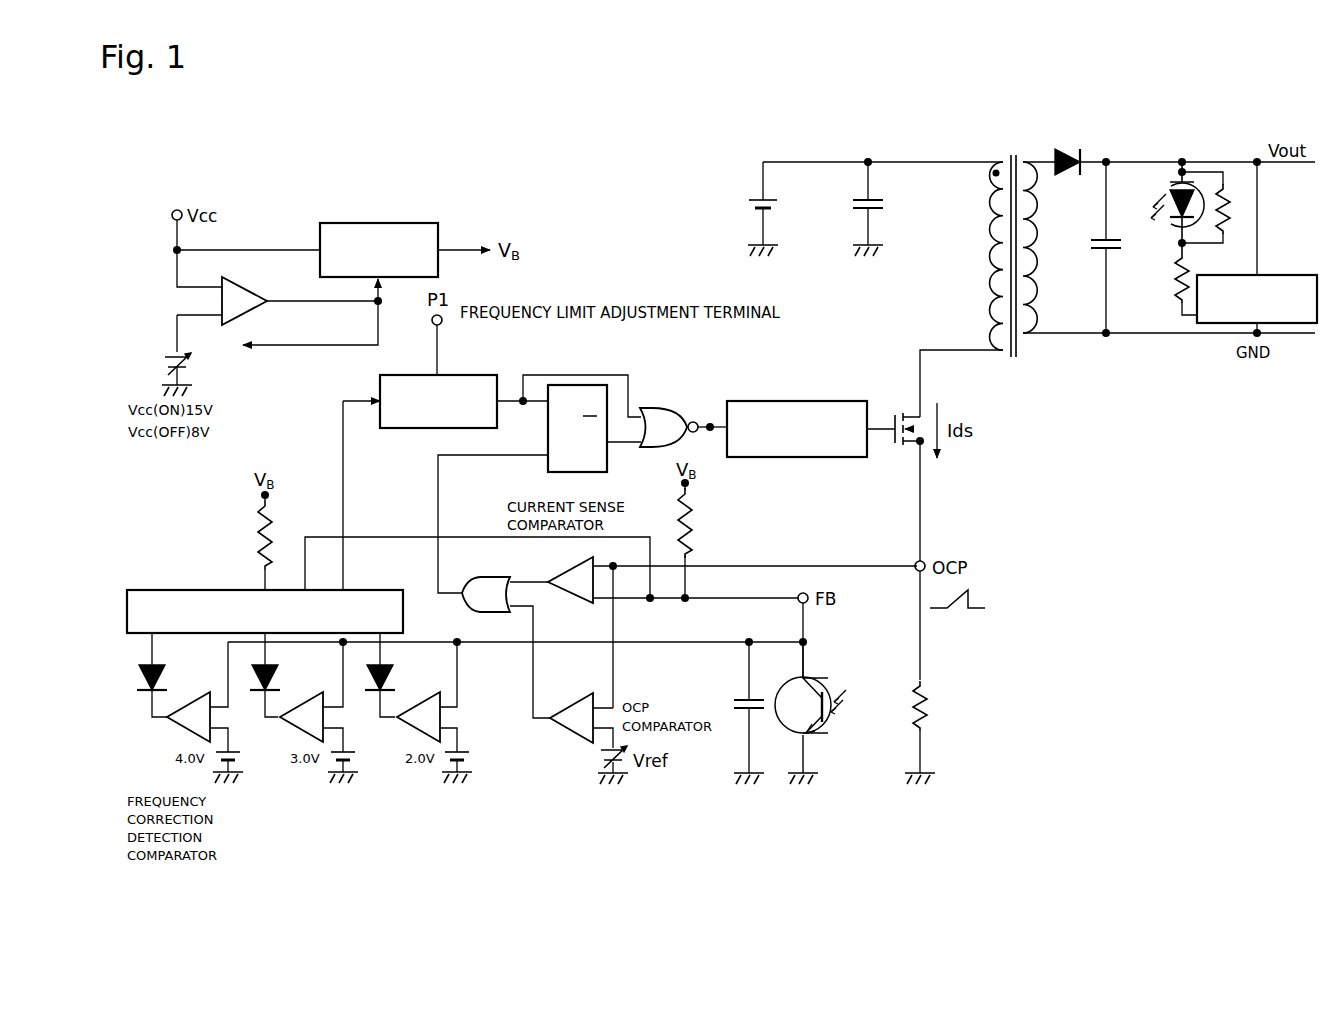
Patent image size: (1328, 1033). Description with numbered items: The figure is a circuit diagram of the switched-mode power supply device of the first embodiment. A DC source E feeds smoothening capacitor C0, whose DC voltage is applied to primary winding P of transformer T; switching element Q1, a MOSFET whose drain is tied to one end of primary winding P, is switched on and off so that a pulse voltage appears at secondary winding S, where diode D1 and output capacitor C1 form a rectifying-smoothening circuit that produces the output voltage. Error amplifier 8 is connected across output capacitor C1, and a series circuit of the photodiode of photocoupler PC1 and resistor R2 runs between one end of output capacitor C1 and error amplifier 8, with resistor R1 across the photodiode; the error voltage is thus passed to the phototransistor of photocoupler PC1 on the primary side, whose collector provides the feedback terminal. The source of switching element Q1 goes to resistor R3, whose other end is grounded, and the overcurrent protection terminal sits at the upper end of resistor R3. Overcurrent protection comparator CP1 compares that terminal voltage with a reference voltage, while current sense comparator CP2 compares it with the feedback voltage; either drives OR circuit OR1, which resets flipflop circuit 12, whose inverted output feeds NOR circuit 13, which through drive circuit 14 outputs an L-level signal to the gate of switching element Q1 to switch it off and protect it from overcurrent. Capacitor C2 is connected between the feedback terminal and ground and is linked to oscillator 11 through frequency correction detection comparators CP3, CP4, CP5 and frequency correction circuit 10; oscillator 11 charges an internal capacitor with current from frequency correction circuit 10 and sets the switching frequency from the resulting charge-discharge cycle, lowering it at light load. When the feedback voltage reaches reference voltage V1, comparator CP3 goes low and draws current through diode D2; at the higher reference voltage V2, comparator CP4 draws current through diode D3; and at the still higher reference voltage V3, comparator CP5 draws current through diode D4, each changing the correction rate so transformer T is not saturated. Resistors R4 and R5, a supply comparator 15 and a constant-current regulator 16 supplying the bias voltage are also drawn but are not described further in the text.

The error amplifier 8 is at (1296, 275).
The frequency correction circuit 10 is at (190, 590).
The oscillator 11 is at (397, 429).
The flipflop circuit 12 is at (578, 385).
The NOR circuit 13 is at (668, 408).
The drive circuit 14 is at (787, 401).
The comparator 15 is at (246, 316).
The constant current regulator 16 is at (366, 222).
The switching element Q1 is at (908, 411).
The transformer T is at (1014, 244).
The primary winding P is at (965, 249).
The secondary winding S is at (1049, 251).
The DC input source E is at (747, 203).
The smoothening capacitor C0 is at (851, 203).
The output capacitor C1 is at (1097, 247).
The capacitor C2 is at (737, 707).
The diode D1 is at (1066, 149).
The diode D2 is at (406, 676).
The diode D3 is at (291, 676).
The diode D4 is at (178, 676).
The resistor R1 is at (1233, 197).
The resistor R2 is at (1167, 284).
The resistor R3 is at (931, 696).
The resistor R4 is at (697, 520).
The resistor R5 is at (255, 536).
The photocoupler PC1 is at (1160, 207).
The OCP comparator CP1 is at (565, 738).
The current sense comparator CP2 is at (557, 592).
The frequency correction detection comparator CP3 is at (407, 738).
The frequency correction detection comparator CP4 is at (293, 738).
The frequency correction detection comparator CP5 is at (180, 738).
The OR circuit OR1 is at (484, 617).
The reference voltage V1 is at (467, 744).
The reference voltage V2 is at (352, 744).
The reference voltage V3 is at (238, 744).